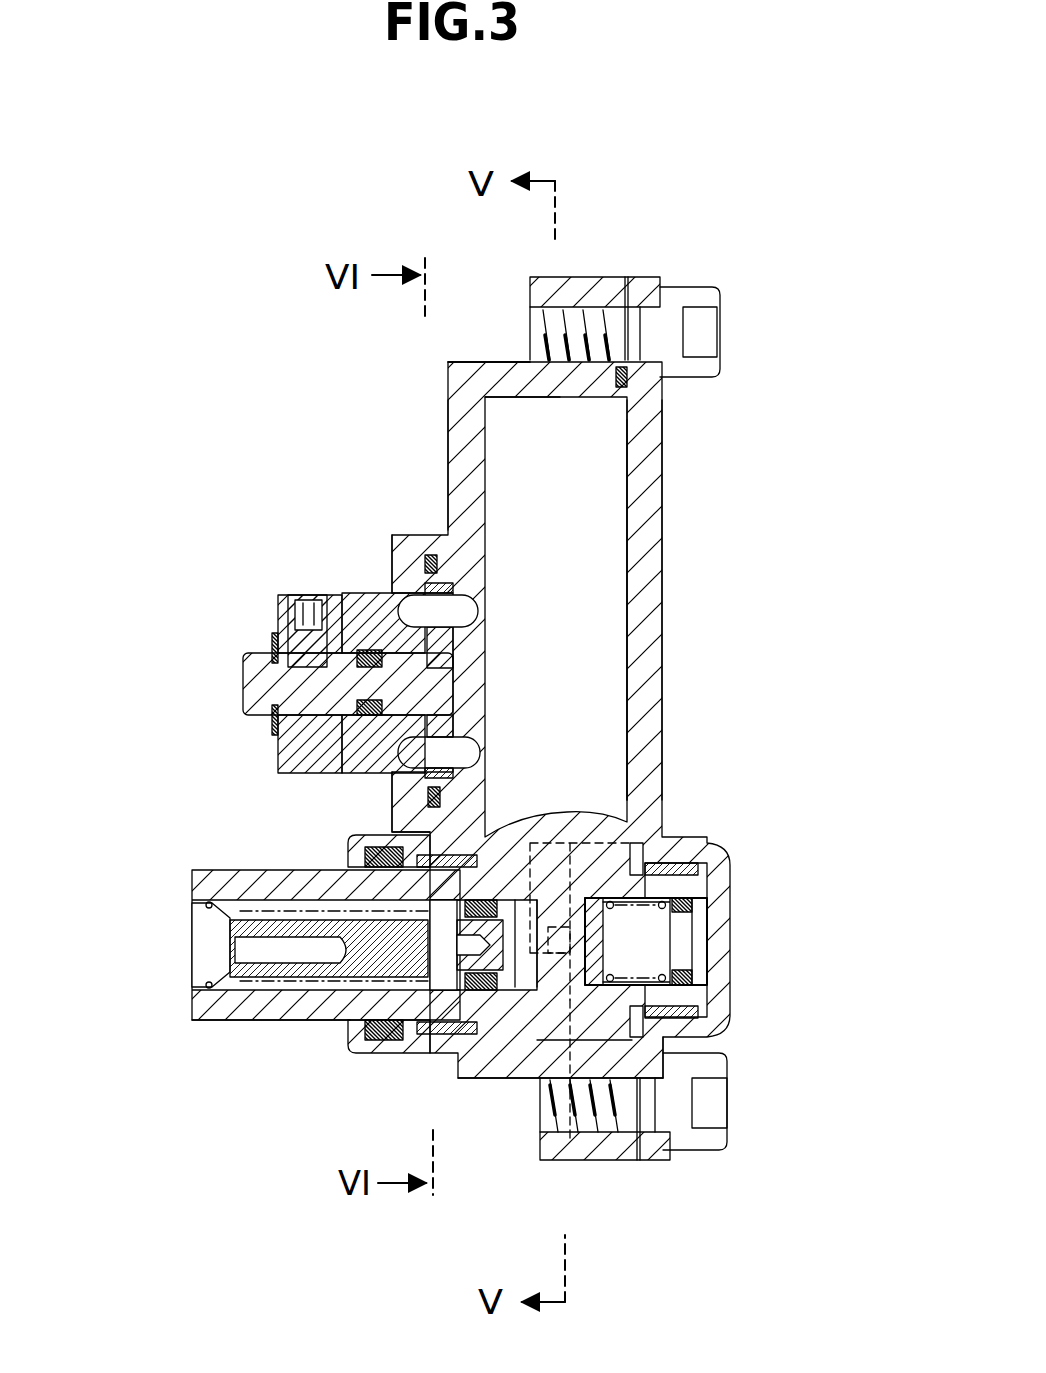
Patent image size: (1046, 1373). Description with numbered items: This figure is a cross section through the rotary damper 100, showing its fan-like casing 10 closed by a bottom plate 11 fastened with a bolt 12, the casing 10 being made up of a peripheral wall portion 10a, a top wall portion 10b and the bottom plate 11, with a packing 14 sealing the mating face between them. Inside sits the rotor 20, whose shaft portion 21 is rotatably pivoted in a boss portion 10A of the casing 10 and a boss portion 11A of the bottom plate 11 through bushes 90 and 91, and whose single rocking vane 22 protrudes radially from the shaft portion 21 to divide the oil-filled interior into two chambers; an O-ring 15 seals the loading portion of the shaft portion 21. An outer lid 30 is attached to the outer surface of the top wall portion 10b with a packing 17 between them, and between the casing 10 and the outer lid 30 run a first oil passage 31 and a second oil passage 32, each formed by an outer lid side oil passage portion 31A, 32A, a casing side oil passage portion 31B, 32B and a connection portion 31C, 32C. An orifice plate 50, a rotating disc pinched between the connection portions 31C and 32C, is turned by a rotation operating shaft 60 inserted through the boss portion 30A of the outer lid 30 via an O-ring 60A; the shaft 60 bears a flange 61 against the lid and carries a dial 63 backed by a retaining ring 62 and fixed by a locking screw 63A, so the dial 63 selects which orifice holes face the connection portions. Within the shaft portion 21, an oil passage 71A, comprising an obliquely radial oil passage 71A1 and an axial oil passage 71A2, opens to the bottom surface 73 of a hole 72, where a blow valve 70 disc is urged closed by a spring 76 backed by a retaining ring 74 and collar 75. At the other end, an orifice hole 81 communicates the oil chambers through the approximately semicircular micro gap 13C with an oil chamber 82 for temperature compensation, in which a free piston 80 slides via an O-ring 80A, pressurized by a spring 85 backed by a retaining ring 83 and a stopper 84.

The rotary damper 100 is at (355, 370).
The casing 10 is at (448, 420).
The peripheral wall portion 10a is at (512, 370).
The top wall portion 10b is at (460, 460).
The boss portion of the casing 10A is at (380, 1058).
The bottom plate 11 is at (645, 472).
The boss portion of the bottom plate 11A is at (690, 1040).
The bolt 12 is at (710, 300).
The micro gap 13C is at (545, 1100).
The packing 14 is at (628, 375).
The O-ring 15 is at (385, 1045).
The packing 17 is at (437, 560).
The rotor 20 is at (210, 1030).
The shaft portion 21 is at (258, 978).
The rocking vane 22 is at (610, 615).
The outer lid 30 is at (412, 537).
The boss portion of the outer lid 30A is at (385, 598).
The first oil passage 31 is at (448, 592).
The outer lid side oil passage portion 31A is at (425, 560).
The casing side oil passage portion 31B is at (460, 607).
The connection portion 31C is at (440, 645).
The second oil passage 32 is at (448, 776).
The outer lid side oil passage portion 32A is at (370, 760).
The casing side oil passage portion 32B is at (460, 757).
The connection portion 32C is at (440, 722).
The orifice plate 50 is at (410, 782).
The rotation operating shaft 60 is at (255, 680).
The O-ring 60A is at (273, 712).
The flange 61 is at (290, 740).
The retaining ring 62 is at (273, 646).
The dial 63 is at (290, 625).
The locking screw 63A is at (305, 605).
The blow valve 70 is at (650, 925).
The oil passage 71A is at (530, 843).
The obliquely radial oil passage 71A1 is at (615, 830).
The axial oil passage 71A2 is at (571, 1060).
The hole 72 is at (690, 885).
The bottom surface 73 is at (620, 1060).
The retaining ring 74 is at (708, 985).
The collar 75 is at (695, 945).
The spring 76 is at (665, 1085).
The free piston 80 is at (400, 870).
The O-ring 80A is at (438, 1035).
The orifice hole 81 is at (520, 1045).
The oil chamber for temperature compensation 82 is at (478, 1040).
The retaining ring 83 is at (205, 904).
The stopper 84 is at (200, 948).
The spring 85 is at (258, 1005).
The bush 90 is at (445, 995).
The bush 91 is at (700, 1100).